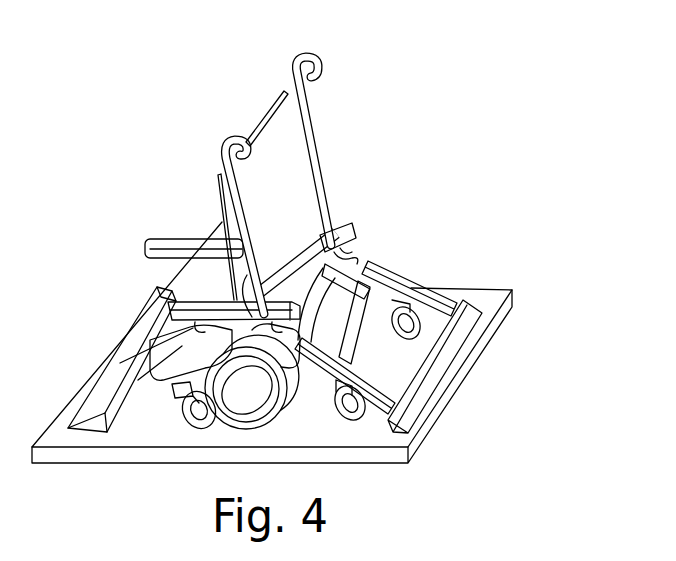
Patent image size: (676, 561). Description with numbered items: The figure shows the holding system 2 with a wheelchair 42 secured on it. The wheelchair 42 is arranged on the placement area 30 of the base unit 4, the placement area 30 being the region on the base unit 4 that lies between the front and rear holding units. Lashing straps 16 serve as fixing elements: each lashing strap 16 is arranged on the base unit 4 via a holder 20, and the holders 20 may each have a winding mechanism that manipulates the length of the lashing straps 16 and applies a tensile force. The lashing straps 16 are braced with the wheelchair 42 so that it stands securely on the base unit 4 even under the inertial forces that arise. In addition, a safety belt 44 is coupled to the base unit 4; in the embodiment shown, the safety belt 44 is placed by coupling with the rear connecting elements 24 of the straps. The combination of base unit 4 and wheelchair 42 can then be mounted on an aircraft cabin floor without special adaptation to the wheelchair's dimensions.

The holding system 2 is at (491, 222).
The base unit 4 is at (485, 303).
The lashing straps 16 is at (147, 363).
The holder 20 is at (437, 358).
The rear connecting element 24 is at (357, 258).
The placement area 30 is at (332, 441).
The wheelchair 42 is at (248, 122).
The safety belt 44 is at (343, 240).